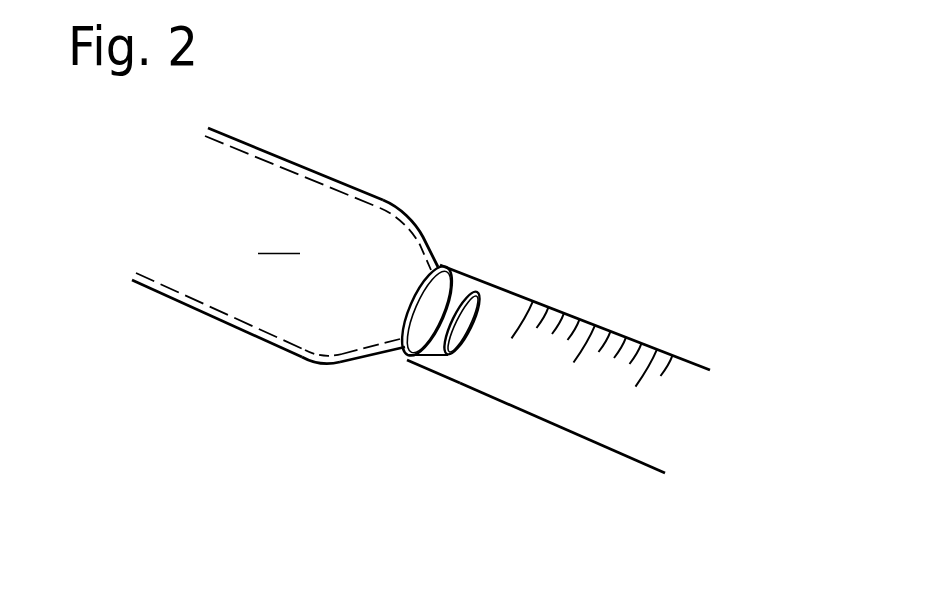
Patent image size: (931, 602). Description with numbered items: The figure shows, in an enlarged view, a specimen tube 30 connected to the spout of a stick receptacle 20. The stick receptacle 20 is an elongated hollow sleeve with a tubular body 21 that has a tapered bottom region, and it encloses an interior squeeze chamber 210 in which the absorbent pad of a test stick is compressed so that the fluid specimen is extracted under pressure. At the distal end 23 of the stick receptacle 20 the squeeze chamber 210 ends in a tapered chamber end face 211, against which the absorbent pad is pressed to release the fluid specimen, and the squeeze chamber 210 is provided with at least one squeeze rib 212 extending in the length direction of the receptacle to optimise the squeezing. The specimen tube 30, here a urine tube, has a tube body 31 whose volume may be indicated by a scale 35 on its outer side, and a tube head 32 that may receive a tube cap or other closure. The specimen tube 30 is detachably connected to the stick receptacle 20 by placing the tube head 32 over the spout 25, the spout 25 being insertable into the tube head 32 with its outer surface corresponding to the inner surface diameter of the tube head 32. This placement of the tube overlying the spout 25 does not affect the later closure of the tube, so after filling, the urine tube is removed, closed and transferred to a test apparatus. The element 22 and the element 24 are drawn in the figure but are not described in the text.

The stick receptacle 20 is at (253, 372).
The tubular body 21 is at (348, 181).
The tube lumen 22 is at (138, 242).
The squeeze chamber 210 is at (269, 282).
The chamber end face 211 is at (421, 230).
The squeeze rib 212 is at (293, 297).
The distal end 23 is at (368, 369).
The connector ring 24 is at (482, 289).
The spout 25 is at (462, 292).
The specimen tube 30 is at (597, 387).
The tube body 31 is at (622, 417).
The tube head 32 is at (453, 370).
The scale 35 is at (682, 333).